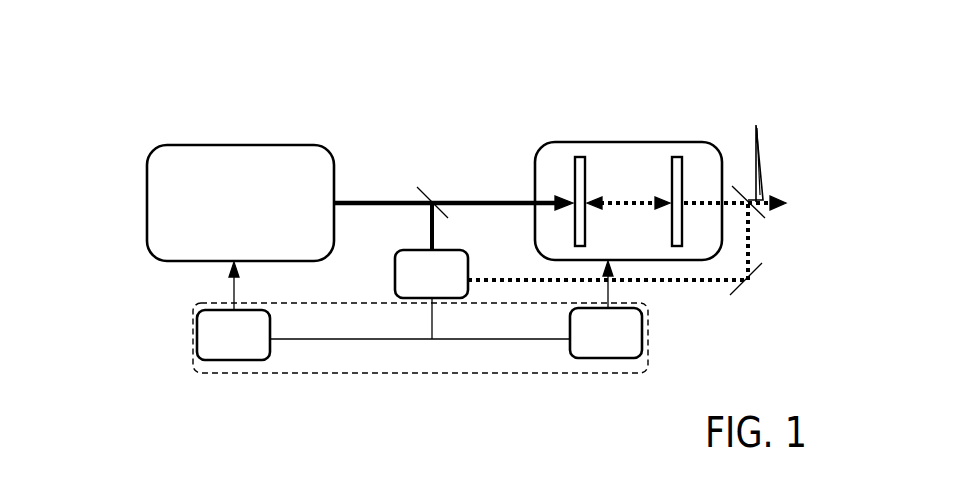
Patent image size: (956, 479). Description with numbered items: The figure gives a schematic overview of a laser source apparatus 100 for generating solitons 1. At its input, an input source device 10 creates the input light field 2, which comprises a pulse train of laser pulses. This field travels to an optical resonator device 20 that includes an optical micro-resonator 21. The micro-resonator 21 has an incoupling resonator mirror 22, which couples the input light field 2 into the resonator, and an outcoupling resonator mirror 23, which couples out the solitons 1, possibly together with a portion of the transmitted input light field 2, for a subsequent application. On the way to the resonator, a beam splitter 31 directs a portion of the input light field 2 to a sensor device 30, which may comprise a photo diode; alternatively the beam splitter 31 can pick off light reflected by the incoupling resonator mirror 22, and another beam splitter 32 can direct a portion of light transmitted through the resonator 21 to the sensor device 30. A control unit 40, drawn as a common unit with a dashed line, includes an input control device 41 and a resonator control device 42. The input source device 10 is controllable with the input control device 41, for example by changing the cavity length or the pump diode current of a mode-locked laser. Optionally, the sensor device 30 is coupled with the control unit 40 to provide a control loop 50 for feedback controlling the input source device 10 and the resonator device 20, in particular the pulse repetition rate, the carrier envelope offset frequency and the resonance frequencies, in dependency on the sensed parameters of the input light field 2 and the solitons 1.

The laser source apparatus 100 is at (190, 90).
The input light field 2 is at (183, 210).
The input source device 10 is at (323, 176).
The control loop 50 is at (380, 273).
The beam splitter 31 is at (427, 198).
The sensor device 30 is at (458, 286).
The optical resonator device 20 is at (713, 176).
The incoupling resonator mirror 22 is at (580, 193).
The outcoupling resonator mirror 23 is at (675, 243).
The optical micro-resonator 21 is at (628, 170).
The beam splitter 32 is at (762, 217).
The solitons 1 is at (762, 177).
The control unit 40 is at (545, 368).
The input control device 41 is at (259, 348).
The resonator control device 42 is at (634, 348).